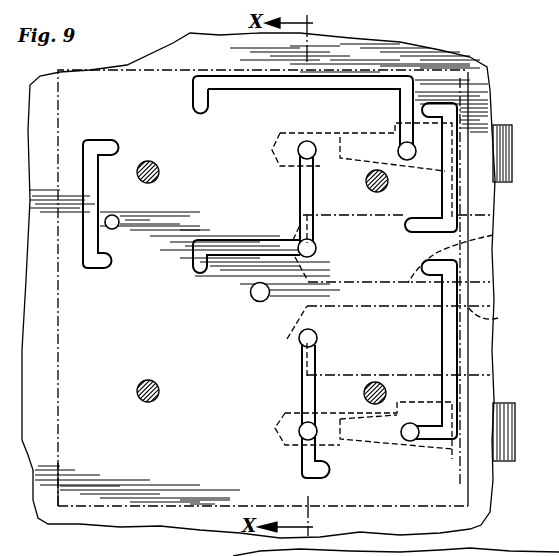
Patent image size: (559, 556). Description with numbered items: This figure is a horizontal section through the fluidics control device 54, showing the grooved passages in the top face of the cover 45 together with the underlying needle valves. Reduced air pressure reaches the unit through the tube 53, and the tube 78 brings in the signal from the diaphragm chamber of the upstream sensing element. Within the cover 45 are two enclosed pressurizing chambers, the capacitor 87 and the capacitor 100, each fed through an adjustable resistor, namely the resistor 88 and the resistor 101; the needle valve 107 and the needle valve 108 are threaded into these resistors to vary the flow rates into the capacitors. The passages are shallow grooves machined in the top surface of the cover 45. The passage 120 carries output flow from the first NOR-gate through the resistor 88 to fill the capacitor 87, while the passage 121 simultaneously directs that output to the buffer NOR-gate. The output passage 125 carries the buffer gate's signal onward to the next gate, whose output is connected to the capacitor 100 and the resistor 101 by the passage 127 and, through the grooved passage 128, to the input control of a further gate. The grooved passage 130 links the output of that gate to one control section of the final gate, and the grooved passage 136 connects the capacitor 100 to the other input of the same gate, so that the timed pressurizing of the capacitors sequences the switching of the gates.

The cover 45 is at (37, 459).
The tube 53 is at (260, 302).
The fluidics control device 54 is at (474, 76).
The tube 78 is at (120, 220).
The capacitor 87 is at (498, 318).
The adjustable resistor 88 is at (399, 451).
The capacitor 100 is at (493, 235).
The adjustable resistor 101 is at (396, 176).
The needle valve 107 is at (500, 407).
The needle valve 108 is at (500, 132).
The passage 120 is at (300, 397).
The passage 121 is at (450, 346).
The output passage 125 is at (452, 198).
The passage 127 is at (303, 188).
The grooved passage 128 is at (363, 82).
The grooved passage 130 is at (88, 157).
The grooved passage 136 is at (243, 247).